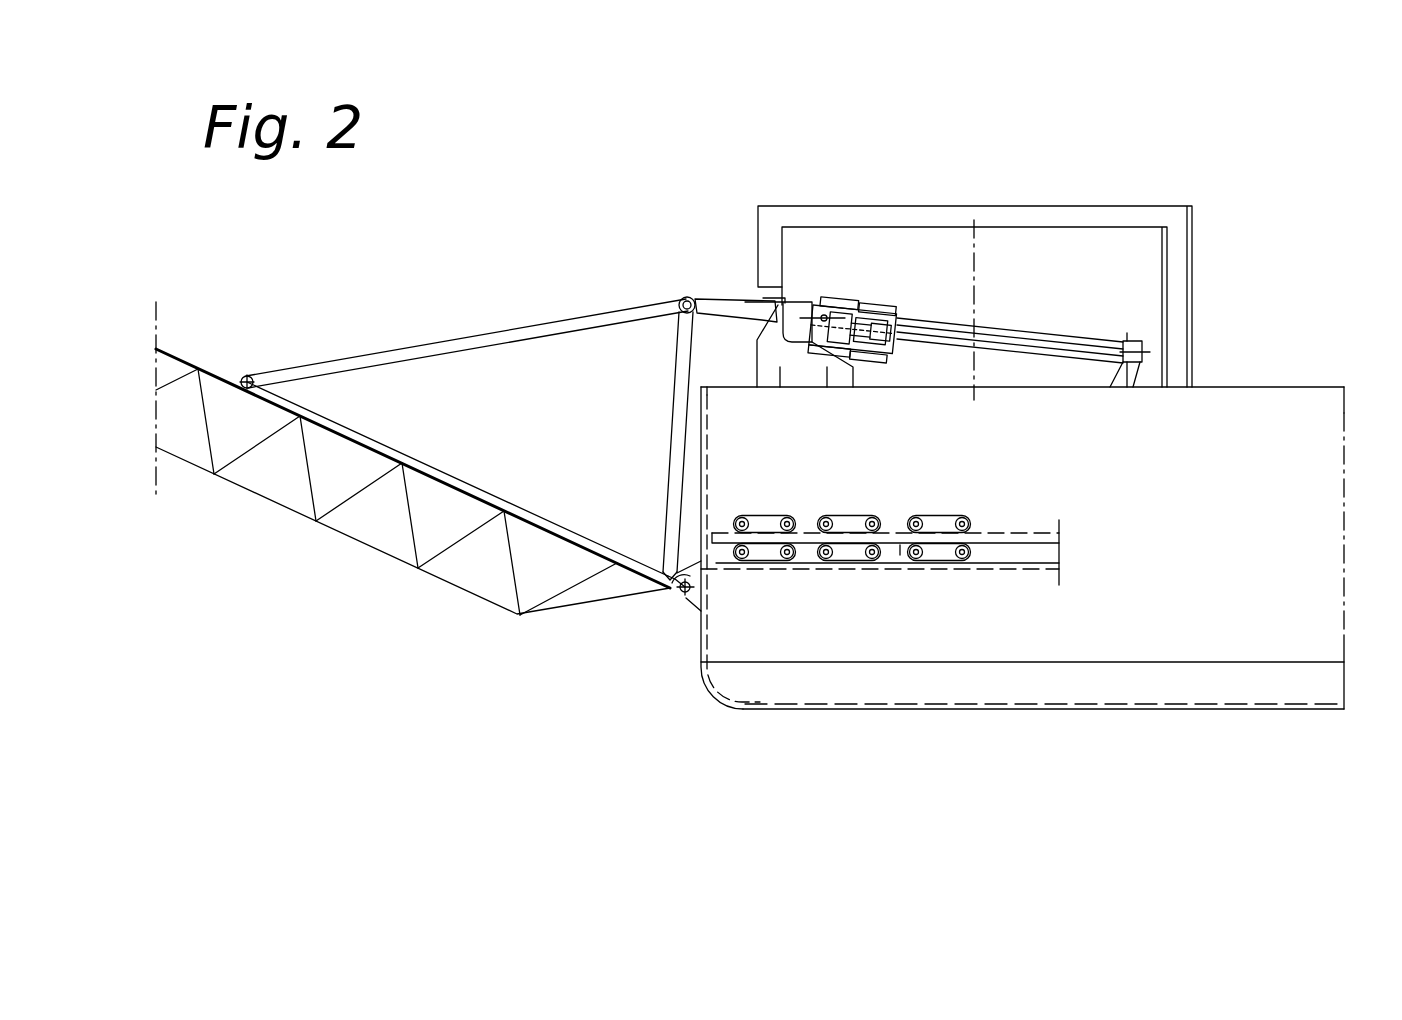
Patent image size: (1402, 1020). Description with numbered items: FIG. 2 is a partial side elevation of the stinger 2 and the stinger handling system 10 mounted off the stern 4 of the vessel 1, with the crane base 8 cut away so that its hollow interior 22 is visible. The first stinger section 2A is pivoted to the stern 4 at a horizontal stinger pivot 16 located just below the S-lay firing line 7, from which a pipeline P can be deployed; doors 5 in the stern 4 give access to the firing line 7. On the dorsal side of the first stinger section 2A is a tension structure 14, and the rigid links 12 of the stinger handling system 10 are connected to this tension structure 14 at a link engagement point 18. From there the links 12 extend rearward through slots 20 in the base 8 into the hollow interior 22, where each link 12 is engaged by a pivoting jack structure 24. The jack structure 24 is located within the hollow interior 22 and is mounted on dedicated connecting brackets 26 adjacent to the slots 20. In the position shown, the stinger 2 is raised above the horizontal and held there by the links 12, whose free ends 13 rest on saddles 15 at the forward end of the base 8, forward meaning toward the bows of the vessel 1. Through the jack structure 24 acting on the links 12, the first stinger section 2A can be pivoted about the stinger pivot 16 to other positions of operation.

The vessel 1 is at (1212, 711).
The stinger 2 is at (208, 366).
The first stinger section 2A is at (415, 566).
The stern 4 is at (702, 623).
The doors 5 is at (698, 510).
The S-lay firing line 7 is at (937, 570).
The hollow base 8 is at (1190, 255).
The stinger handling system 10 is at (717, 285).
The rigid links 12 is at (737, 302).
The free ends 13 is at (1090, 336).
The tension structure 14 is at (512, 331).
The saddles 15 is at (1127, 333).
The stinger pivot 16 is at (683, 592).
The link engagement point 18 is at (684, 299).
The slots 20 is at (787, 292).
The hollow interior 22 is at (1062, 240).
The pivoting jack structure 24 is at (893, 292).
The connecting brackets 26 is at (857, 300).
The pipeline P is at (900, 556).